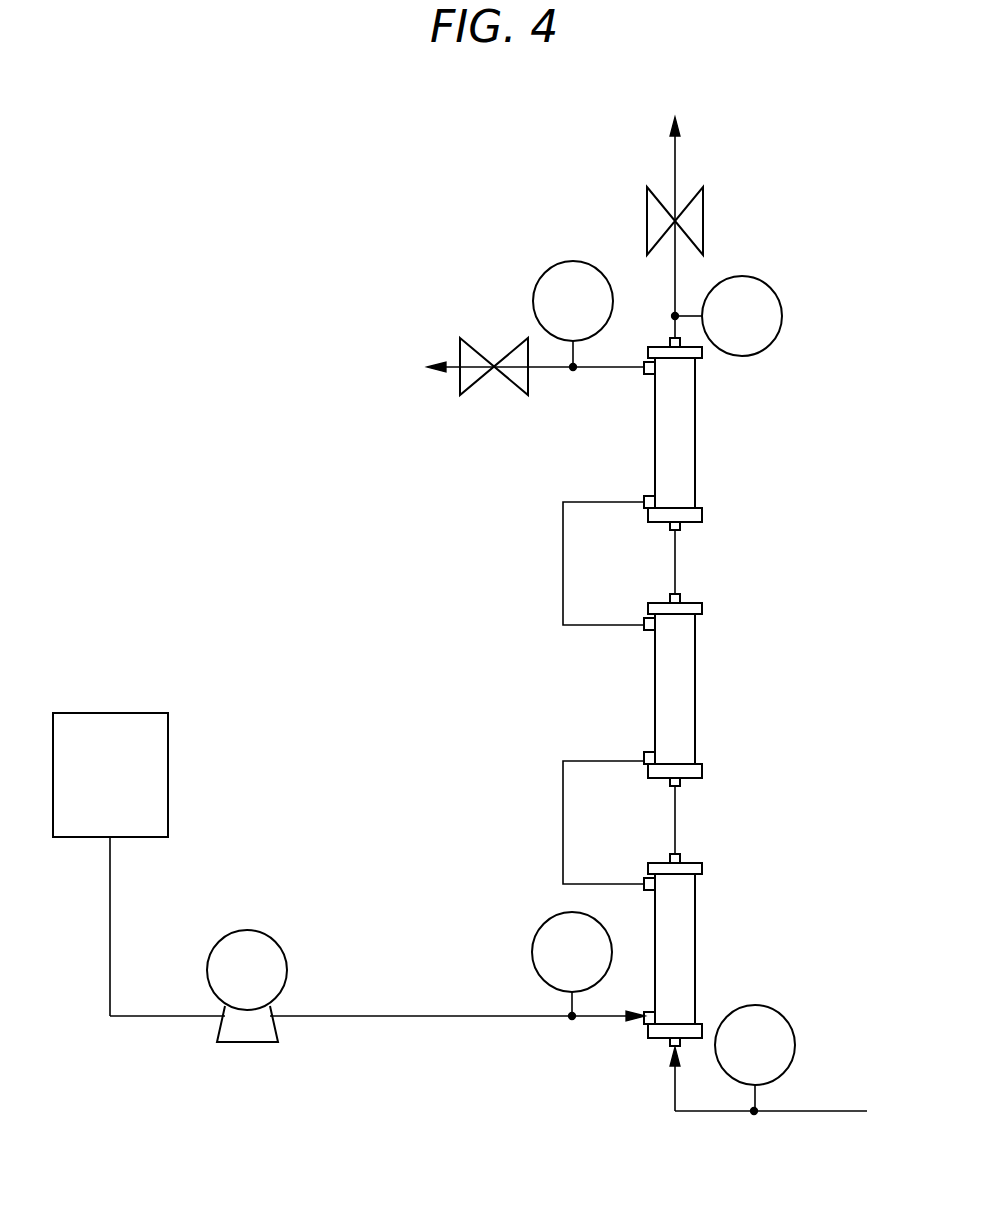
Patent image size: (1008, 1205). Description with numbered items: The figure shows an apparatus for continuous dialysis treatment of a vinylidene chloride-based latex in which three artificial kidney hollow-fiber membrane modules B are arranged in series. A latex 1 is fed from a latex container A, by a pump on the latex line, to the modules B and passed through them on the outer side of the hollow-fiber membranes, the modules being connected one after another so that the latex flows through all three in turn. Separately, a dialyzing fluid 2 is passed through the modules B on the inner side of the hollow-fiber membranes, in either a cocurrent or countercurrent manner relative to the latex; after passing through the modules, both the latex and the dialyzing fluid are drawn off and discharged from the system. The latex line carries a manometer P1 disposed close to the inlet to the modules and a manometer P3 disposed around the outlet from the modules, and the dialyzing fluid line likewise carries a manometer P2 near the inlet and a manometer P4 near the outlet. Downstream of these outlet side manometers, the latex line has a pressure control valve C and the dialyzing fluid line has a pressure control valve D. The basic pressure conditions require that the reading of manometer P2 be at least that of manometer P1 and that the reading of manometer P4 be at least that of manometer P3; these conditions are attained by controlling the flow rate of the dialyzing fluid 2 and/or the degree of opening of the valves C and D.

The latex container A is at (128, 864).
The artificial kidney hollow-fiber module B is at (648, 692).
The pressure control valve C is at (535, 383).
The pressure control valve D is at (692, 227).
The manometer P1 is at (549, 966).
The manometer P2 is at (774, 1060).
The manometer P3 is at (573, 300).
The manometer P4 is at (741, 312).
The latex 1 is at (377, 986).
The dialyzing fluid 2 is at (789, 1101).